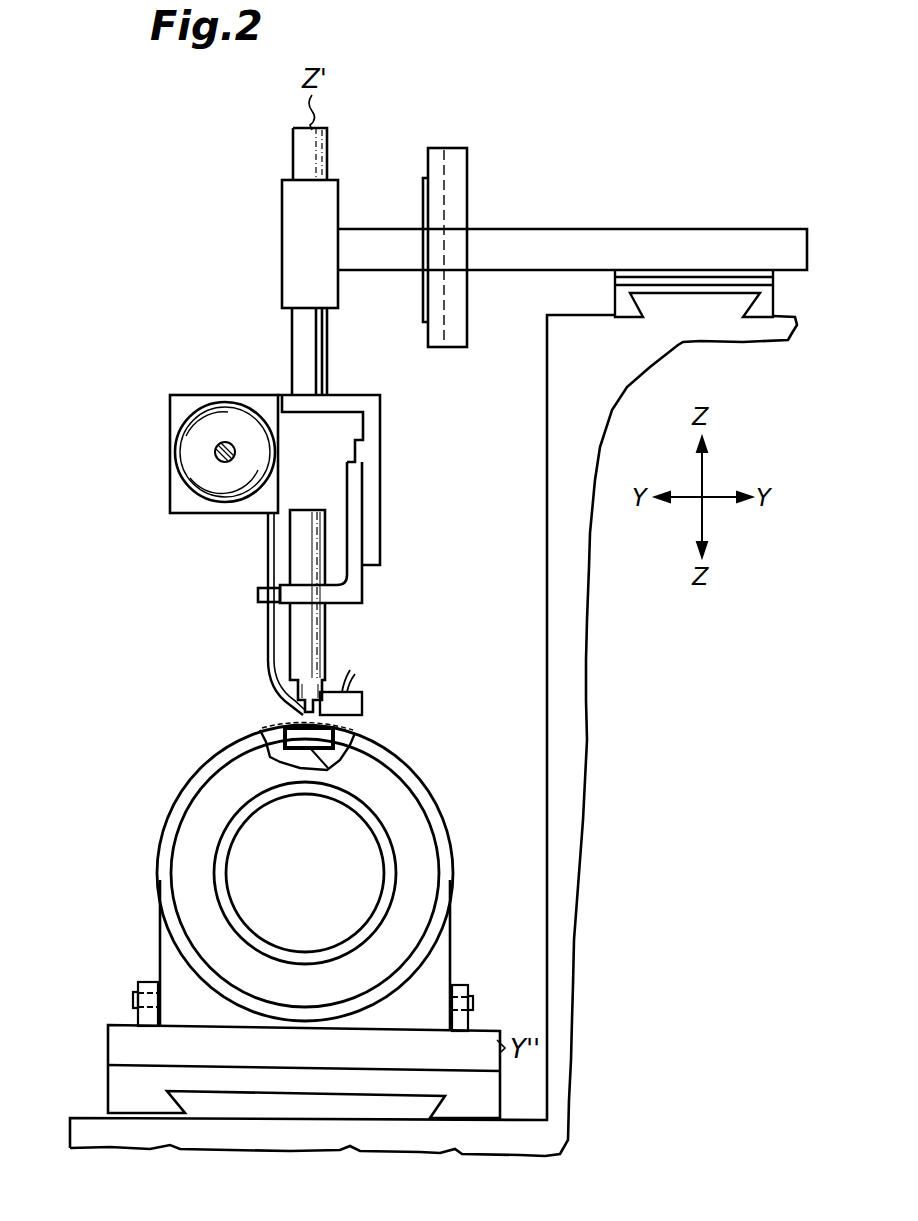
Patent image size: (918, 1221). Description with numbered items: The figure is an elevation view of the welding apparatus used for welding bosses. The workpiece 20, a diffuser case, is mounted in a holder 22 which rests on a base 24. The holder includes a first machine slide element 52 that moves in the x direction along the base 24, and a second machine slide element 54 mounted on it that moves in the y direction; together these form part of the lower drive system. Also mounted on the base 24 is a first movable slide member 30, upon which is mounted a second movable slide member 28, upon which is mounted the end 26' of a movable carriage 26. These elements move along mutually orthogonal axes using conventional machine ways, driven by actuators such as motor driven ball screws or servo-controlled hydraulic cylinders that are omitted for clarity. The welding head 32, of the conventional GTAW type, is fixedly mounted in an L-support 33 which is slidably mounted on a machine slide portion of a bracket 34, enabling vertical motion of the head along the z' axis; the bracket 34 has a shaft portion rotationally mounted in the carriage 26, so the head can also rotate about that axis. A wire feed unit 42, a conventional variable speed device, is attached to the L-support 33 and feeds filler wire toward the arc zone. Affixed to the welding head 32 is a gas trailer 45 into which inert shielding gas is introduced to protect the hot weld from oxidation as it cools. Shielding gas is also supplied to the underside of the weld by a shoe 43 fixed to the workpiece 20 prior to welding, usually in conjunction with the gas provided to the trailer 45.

The workpiece 20 is at (222, 785).
The holder 22 is at (104, 1010).
The base 24 is at (547, 495).
The movable carriage 26 is at (259, 261).
The end of movable carriage 26' is at (429, 216).
The second movable slide member 28 is at (548, 238).
The first movable slide member 30 is at (645, 293).
The welding head 32 is at (300, 547).
The L-support 33 is at (357, 596).
The bracket 34 is at (374, 451).
The wire feed unit 42 is at (186, 397).
The shoe 43 is at (267, 732).
The gas trailer 45 is at (358, 696).
The first machine slide element 52 is at (120, 1081).
The second machine slide element 54 is at (125, 1033).